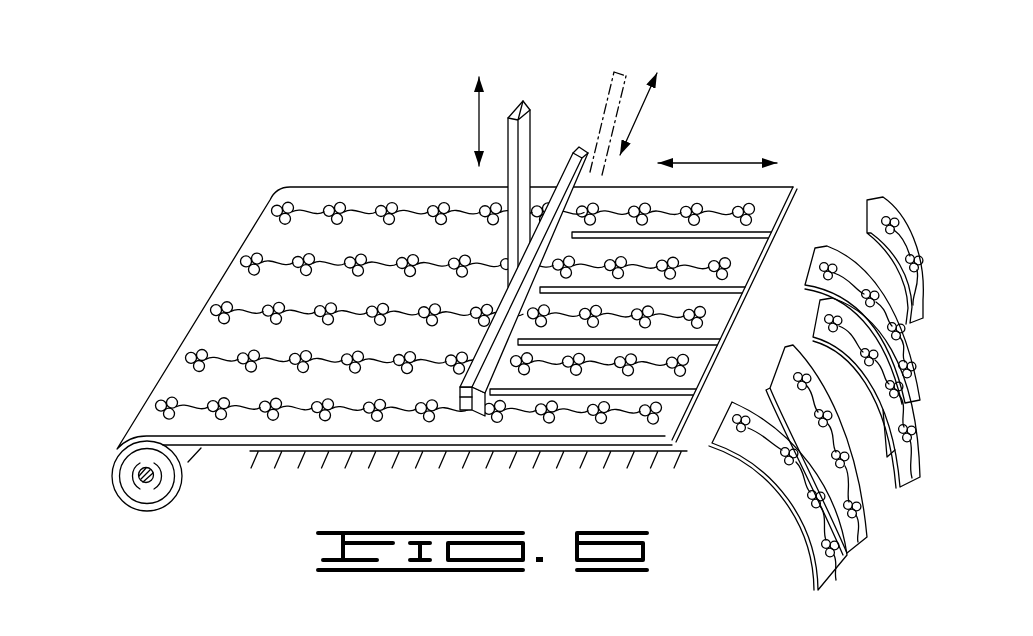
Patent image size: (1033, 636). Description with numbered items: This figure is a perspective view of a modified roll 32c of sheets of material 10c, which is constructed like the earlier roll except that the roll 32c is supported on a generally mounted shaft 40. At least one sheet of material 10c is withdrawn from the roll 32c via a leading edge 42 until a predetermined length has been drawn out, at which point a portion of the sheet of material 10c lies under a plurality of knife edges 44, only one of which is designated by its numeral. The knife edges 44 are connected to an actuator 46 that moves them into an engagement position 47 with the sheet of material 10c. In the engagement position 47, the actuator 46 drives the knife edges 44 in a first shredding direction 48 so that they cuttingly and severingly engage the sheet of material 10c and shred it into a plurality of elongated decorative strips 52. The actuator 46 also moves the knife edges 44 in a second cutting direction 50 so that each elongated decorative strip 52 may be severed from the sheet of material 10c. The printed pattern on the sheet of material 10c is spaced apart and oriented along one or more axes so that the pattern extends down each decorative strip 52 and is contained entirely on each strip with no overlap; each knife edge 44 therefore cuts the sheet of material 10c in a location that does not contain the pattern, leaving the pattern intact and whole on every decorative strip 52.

The sheet of material 10c is at (378, 186).
The roll 32c is at (113, 463).
The shaft 40 is at (146, 484).
The leading edge 42 is at (762, 290).
The knife edges 44 is at (490, 392).
The actuator 46 is at (524, 101).
The engagement position 47 is at (477, 110).
The first shredding direction 48 is at (714, 163).
The second cutting direction 50 is at (640, 103).
The elongated decorative strips 52 is at (812, 508).